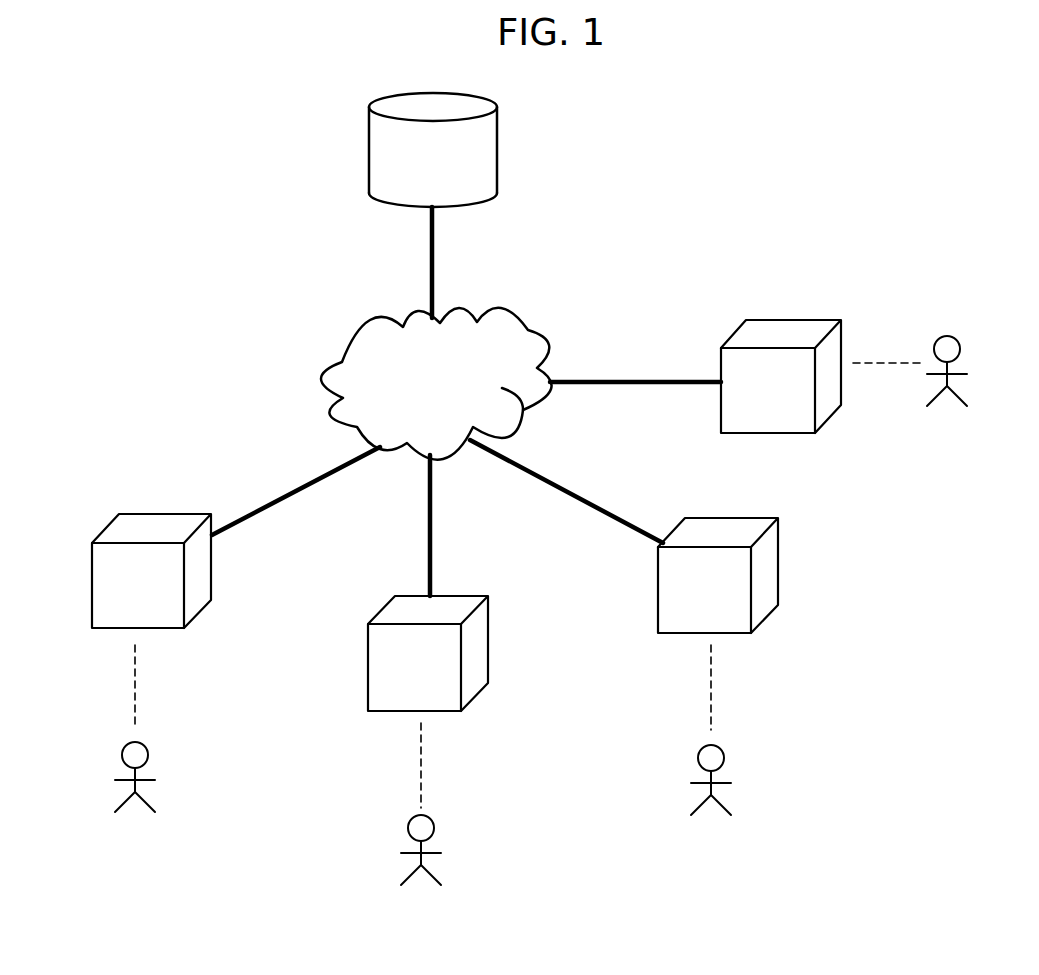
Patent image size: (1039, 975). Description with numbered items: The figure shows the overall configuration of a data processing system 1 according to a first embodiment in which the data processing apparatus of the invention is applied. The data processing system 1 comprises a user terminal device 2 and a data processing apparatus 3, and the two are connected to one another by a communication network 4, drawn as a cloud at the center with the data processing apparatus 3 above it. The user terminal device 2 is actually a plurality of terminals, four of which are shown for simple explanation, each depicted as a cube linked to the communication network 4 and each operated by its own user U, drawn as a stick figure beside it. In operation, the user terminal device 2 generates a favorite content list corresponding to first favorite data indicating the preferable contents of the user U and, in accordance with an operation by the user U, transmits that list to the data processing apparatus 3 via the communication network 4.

The data processing system 1 is at (565, 495).
The user terminal device 2 is at (759, 601).
The data processing apparatus 3 is at (499, 152).
The communication network 4 is at (546, 342).
The user U is at (788, 784).